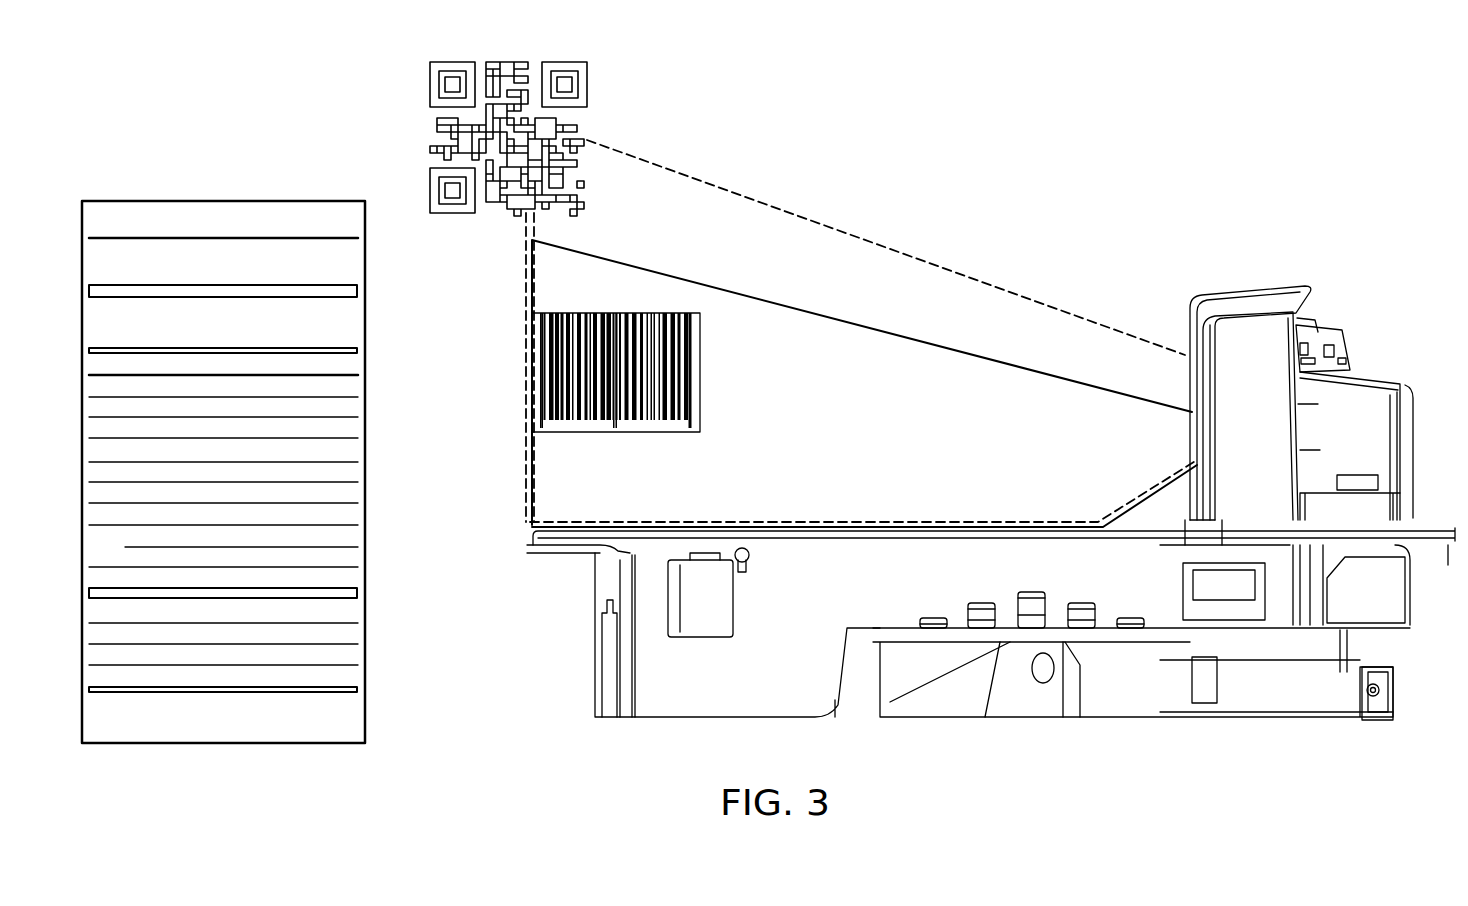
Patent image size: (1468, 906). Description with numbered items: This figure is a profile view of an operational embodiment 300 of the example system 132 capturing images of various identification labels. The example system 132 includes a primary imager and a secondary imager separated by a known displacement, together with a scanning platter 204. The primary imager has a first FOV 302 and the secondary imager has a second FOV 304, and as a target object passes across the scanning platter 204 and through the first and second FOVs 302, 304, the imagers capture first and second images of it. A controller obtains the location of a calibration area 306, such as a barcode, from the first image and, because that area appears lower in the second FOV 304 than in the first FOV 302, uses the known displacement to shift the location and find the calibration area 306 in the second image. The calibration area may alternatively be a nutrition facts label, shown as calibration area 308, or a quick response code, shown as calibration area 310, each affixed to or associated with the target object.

The example system 132 is at (1283, 277).
The scanning platter 204 is at (1116, 540).
The operational embodiment 300 is at (1017, 125).
The first FOV 302 is at (865, 326).
The second FOV 304 is at (990, 280).
The calibration area 306 is at (700, 372).
The calibration area 308 is at (215, 201).
The calibration area 310 is at (510, 62).